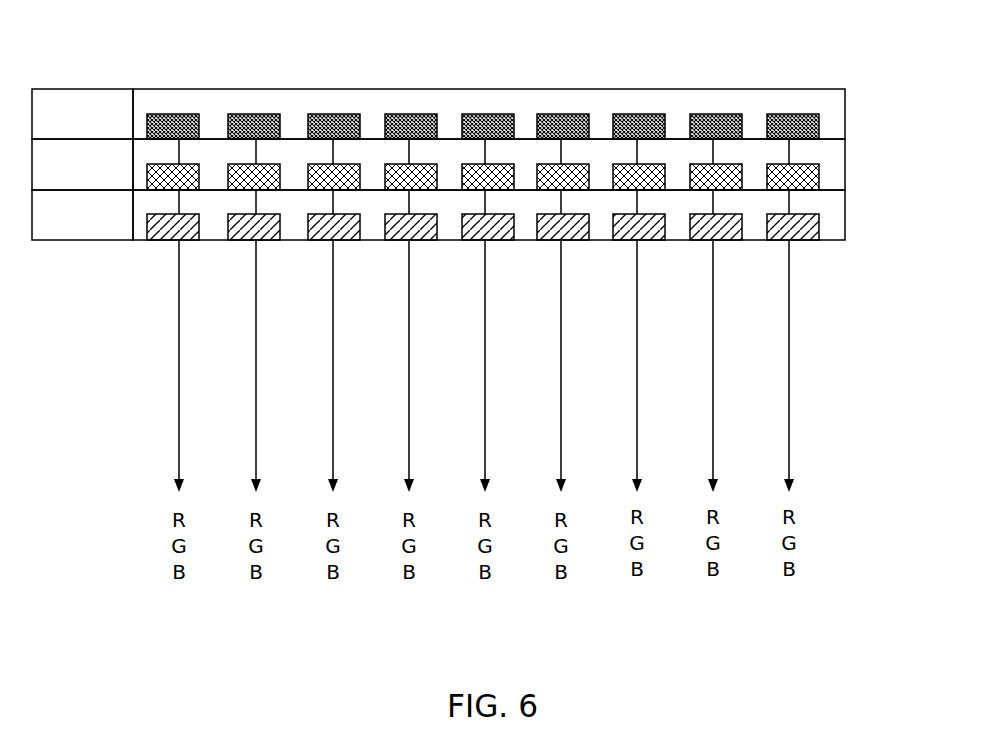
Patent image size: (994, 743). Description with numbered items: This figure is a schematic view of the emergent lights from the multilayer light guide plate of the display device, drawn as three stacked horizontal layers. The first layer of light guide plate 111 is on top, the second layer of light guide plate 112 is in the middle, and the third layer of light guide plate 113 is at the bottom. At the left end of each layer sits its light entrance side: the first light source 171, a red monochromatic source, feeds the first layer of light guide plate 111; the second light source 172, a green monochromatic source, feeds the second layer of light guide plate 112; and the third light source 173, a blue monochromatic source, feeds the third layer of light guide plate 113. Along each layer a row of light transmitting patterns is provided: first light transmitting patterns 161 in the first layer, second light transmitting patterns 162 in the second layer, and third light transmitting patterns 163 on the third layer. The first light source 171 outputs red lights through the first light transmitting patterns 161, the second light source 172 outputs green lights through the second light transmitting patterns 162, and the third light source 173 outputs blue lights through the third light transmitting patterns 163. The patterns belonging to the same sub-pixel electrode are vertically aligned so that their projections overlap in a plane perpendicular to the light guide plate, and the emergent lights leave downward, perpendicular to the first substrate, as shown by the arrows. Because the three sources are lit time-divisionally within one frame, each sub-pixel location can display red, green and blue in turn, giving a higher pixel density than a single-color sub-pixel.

The first layer of light guide plate 111 is at (840, 120).
The second layer of light guide plate 112 is at (846, 165).
The third layer of light guide plate 113 is at (846, 208).
The first light transmitting patterns 161 is at (183, 113).
The second light transmitting patterns 162 is at (282, 163).
The third light transmitting patterns 163 is at (439, 214).
The first light source 171 is at (82, 114).
The second light source 172 is at (82, 164).
The third light source 173 is at (82, 215).